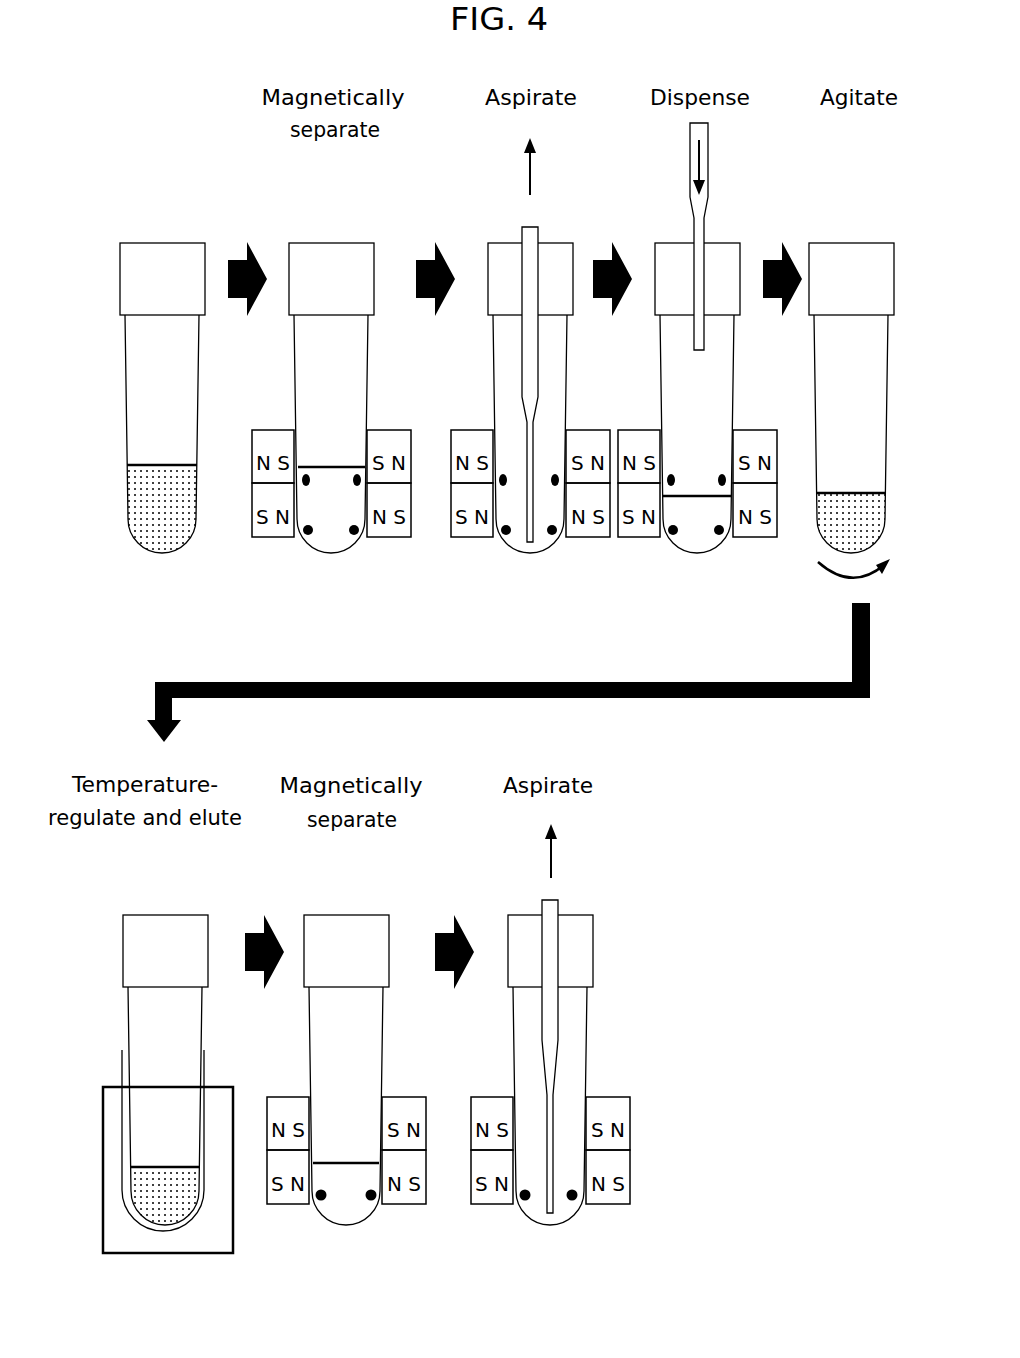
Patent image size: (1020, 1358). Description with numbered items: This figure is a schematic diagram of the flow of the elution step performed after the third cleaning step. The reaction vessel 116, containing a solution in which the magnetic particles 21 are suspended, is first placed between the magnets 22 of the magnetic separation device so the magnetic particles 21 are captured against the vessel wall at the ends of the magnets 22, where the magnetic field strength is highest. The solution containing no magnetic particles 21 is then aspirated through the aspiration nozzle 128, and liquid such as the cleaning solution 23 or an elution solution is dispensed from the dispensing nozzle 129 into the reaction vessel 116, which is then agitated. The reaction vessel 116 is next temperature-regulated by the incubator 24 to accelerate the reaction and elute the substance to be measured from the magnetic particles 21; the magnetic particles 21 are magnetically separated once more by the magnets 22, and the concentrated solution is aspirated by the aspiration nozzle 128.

The reaction vessel 116 is at (162, 257).
The magnets 22 is at (274, 440).
The magnetic particles 21 is at (310, 534).
The cleaning solution 23 is at (697, 538).
The aspiration nozzle 128 is at (539, 229).
The dispensing nozzle 129 is at (709, 197).
The incubator 24 is at (188, 1238).